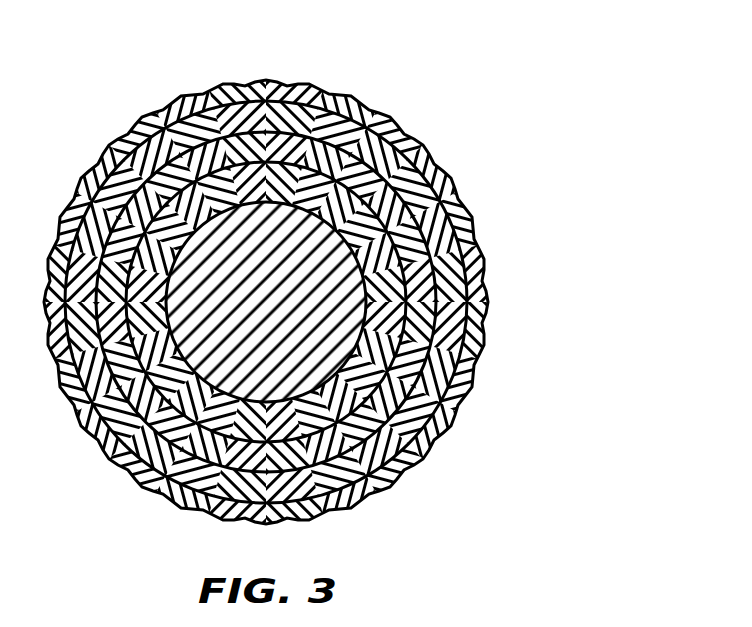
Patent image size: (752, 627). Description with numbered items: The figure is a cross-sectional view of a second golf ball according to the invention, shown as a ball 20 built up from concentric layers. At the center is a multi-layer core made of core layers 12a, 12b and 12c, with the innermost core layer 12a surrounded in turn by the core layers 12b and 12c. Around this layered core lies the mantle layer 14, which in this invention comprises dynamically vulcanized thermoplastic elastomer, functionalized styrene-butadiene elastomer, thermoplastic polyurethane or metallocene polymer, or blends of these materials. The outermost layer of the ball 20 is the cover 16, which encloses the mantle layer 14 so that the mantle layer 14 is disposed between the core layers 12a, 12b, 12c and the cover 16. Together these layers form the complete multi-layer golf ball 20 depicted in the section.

The ball 20 is at (357, 269).
The cover 16 is at (369, 104).
The mantle layer 14 is at (447, 173).
The core layer 12c is at (483, 250).
The core layer 12b is at (480, 333).
The core layer 12a is at (450, 407).